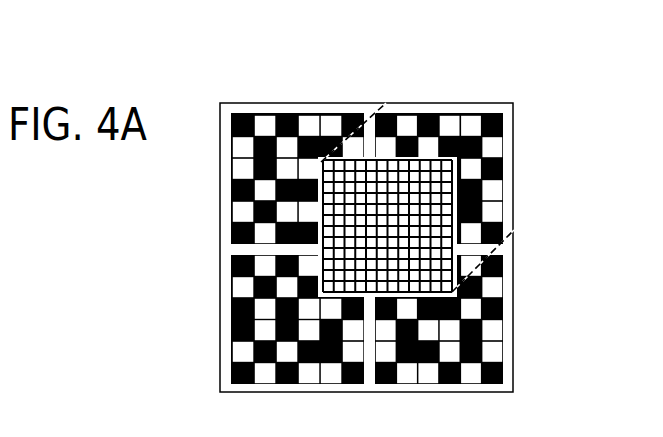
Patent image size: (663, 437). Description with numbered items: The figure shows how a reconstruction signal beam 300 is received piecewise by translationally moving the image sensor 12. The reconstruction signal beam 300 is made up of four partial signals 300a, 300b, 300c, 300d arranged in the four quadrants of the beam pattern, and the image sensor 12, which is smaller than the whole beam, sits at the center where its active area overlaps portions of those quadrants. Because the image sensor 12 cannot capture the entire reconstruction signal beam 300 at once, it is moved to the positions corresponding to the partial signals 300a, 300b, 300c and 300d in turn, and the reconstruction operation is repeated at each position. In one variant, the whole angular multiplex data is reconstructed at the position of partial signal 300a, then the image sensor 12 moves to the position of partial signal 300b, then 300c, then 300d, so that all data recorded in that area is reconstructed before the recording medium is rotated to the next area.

The reconstruction signal beam 300 is at (485, 91).
The partial signal 300a is at (238, 168).
The partial signal 300b is at (497, 122).
The partial signal 300c is at (240, 352).
The partial signal 300d is at (497, 353).
The image sensor 12 is at (447, 199).